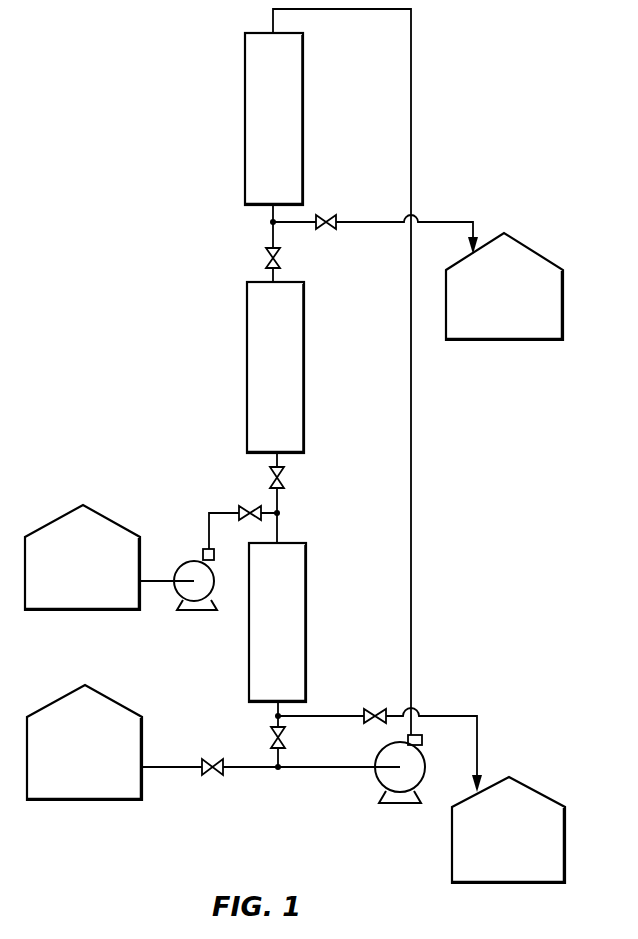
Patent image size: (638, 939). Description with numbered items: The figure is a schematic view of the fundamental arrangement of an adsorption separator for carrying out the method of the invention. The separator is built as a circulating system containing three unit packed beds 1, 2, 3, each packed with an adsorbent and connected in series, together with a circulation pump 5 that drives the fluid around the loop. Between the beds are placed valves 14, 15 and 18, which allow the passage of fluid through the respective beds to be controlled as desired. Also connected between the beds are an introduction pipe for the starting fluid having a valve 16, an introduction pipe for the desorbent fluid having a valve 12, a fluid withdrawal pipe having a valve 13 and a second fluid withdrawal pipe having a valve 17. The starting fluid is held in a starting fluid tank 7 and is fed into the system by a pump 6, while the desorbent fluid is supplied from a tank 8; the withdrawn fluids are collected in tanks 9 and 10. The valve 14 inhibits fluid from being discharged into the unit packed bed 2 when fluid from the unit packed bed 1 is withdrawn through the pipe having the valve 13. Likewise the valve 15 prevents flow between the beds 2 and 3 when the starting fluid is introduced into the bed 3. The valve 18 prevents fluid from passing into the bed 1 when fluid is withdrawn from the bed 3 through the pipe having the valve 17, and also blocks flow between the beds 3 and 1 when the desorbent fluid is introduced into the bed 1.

The unit packed bed 1 is at (280, 97).
The unit packed bed 2 is at (269, 355).
The unit packed bed 3 is at (271, 615).
The circulation pump 5 is at (418, 761).
The pump 6 is at (206, 585).
The starting fluid tank 7 is at (75, 567).
The desorbent fluid tank 8 is at (77, 757).
The tank for withdrawn fluid 9 is at (497, 296).
The tank for withdrawn fluid 10 is at (531, 801).
The valve 12 is at (211, 760).
The valve 13 is at (328, 216).
The valve 14 is at (266, 256).
The valve 15 is at (285, 473).
The valve 16 is at (246, 505).
The valve 17 is at (374, 709).
The valve 18 is at (285, 738).